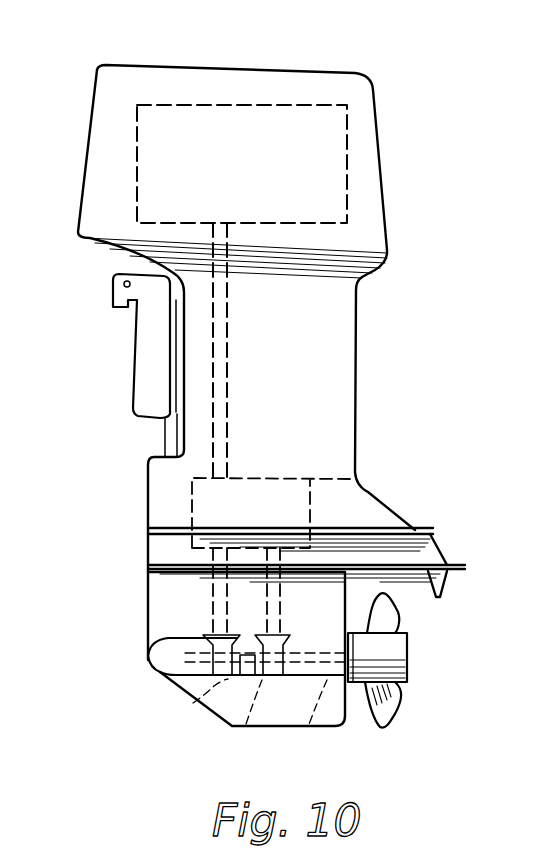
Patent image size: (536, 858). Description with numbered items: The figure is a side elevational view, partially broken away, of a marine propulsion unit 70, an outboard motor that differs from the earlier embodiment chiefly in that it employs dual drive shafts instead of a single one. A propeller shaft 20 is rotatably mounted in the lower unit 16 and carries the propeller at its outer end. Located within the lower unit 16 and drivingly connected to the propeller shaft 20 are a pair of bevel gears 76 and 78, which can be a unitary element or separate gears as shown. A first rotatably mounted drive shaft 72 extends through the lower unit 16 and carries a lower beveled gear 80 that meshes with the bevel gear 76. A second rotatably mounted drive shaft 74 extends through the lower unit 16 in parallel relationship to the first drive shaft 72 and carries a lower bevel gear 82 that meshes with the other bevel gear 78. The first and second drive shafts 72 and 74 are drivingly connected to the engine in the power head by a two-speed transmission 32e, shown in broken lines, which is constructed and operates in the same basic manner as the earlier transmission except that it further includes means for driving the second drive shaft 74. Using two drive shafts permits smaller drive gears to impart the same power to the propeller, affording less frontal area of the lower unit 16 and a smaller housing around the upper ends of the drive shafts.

The marine propulsion unit 70 is at (98, 342).
The two-speed transmission 32e is at (190, 481).
The lower unit 16 is at (130, 518).
The first drive shaft 72 is at (220, 587).
The second drive shaft 74 is at (344, 578).
The bevel gear 76 is at (192, 704).
The lower beveled gear 80 is at (207, 633).
The lower bevel gear 82 is at (287, 637).
The propeller shaft 20 is at (265, 704).
The bevel gear 78 is at (249, 717).